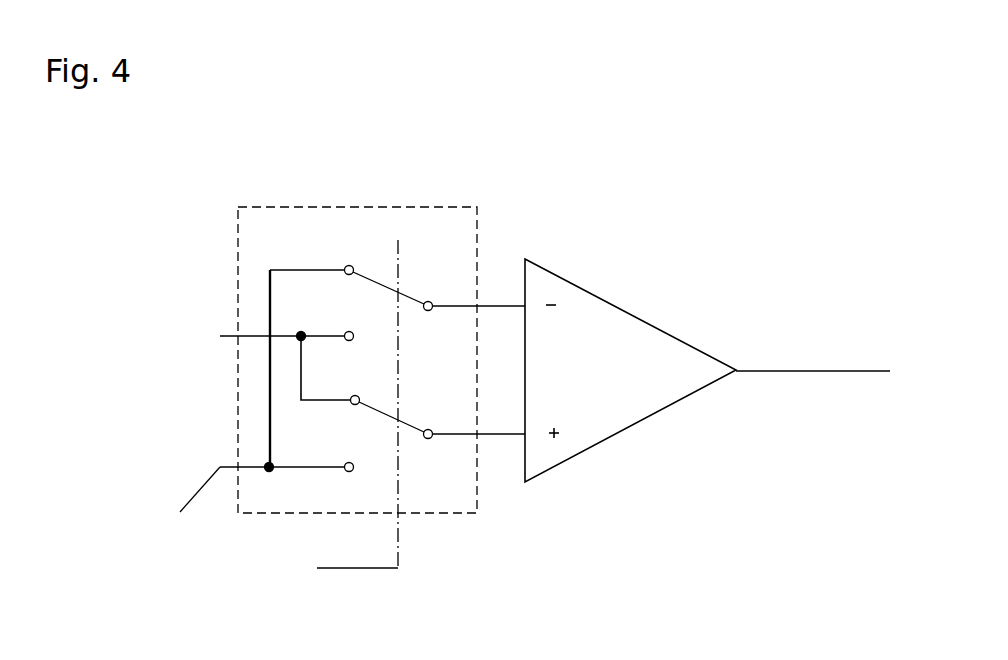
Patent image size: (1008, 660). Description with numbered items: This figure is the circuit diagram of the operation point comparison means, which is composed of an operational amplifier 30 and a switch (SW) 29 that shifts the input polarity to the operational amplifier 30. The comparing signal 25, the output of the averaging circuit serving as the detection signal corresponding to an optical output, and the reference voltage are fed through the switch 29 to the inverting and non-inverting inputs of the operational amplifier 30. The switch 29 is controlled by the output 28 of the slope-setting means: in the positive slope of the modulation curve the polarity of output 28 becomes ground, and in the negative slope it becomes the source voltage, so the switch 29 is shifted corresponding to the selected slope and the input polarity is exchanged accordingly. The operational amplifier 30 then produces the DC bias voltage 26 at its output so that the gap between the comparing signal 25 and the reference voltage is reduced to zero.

The comparing signal 25 is at (232, 335).
The DC bias voltage 26 is at (843, 371).
The output of slope-setting means 28 is at (365, 568).
The switch (SW) 29 is at (445, 223).
The operational amplifier 30 is at (635, 337).